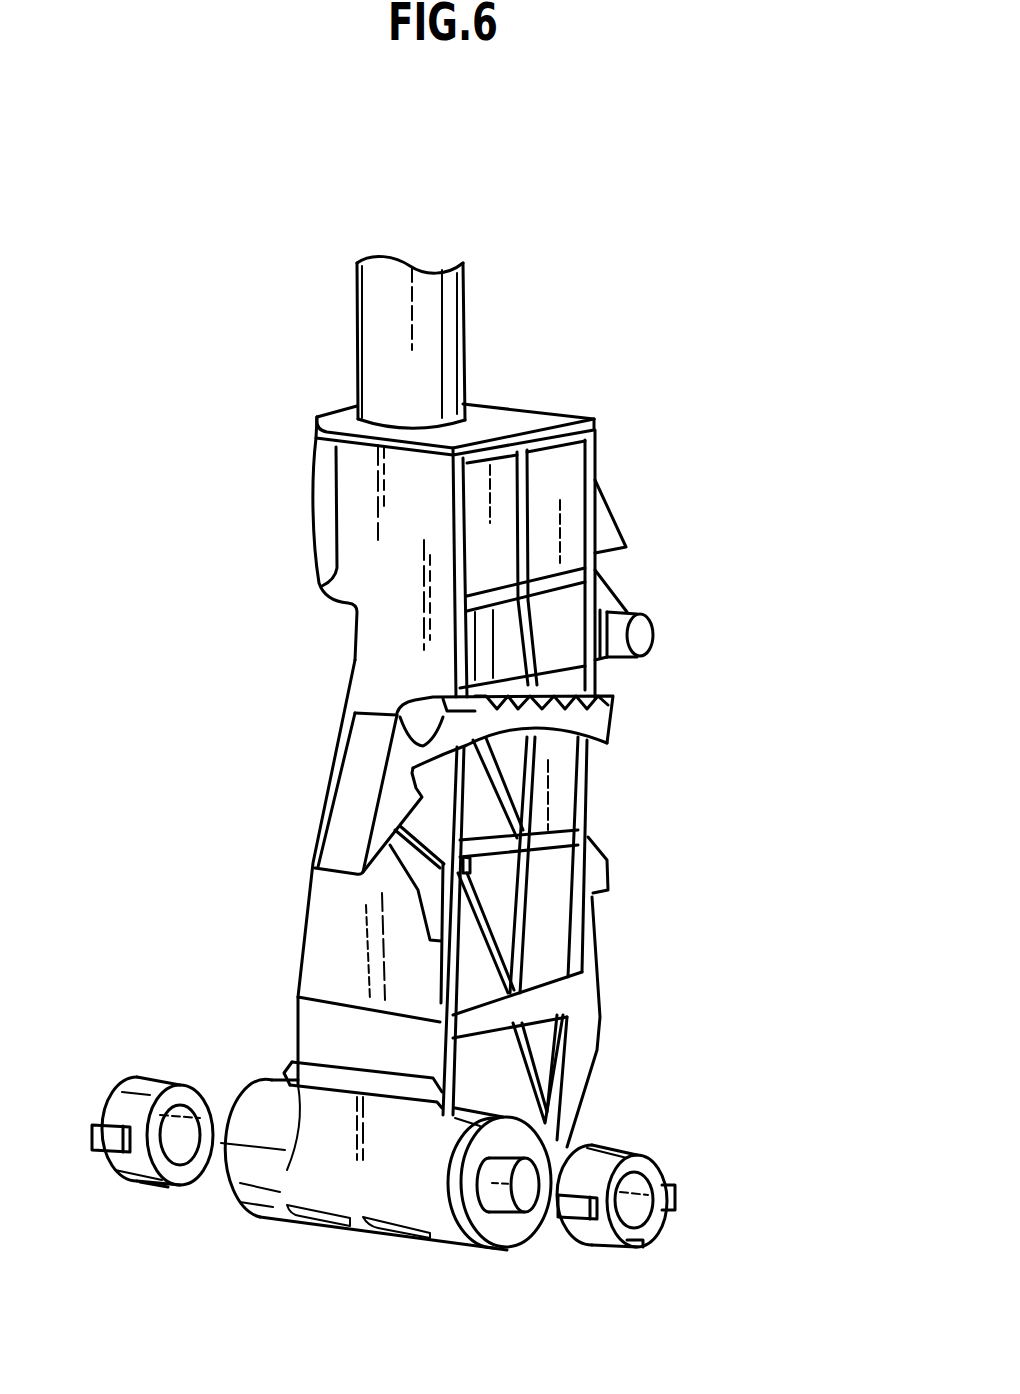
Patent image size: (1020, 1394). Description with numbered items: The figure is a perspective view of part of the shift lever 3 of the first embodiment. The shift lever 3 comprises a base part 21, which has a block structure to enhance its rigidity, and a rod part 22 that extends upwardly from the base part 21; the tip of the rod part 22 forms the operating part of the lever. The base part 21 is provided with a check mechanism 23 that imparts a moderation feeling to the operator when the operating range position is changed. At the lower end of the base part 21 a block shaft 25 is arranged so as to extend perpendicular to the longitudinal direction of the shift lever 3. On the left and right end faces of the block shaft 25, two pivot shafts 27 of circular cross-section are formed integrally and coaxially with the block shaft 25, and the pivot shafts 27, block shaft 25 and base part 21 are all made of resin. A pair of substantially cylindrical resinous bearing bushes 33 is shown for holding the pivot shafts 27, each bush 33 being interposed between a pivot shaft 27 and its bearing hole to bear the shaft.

The shift lever 3 is at (703, 552).
The base part 21 is at (347, 930).
The rod part 22 is at (452, 318).
The check mechanism 23 is at (580, 688).
The block shaft 25 is at (340, 1193).
The pivot shaft 27 is at (502, 1212).
The bearing bush 33 is at (150, 1077).